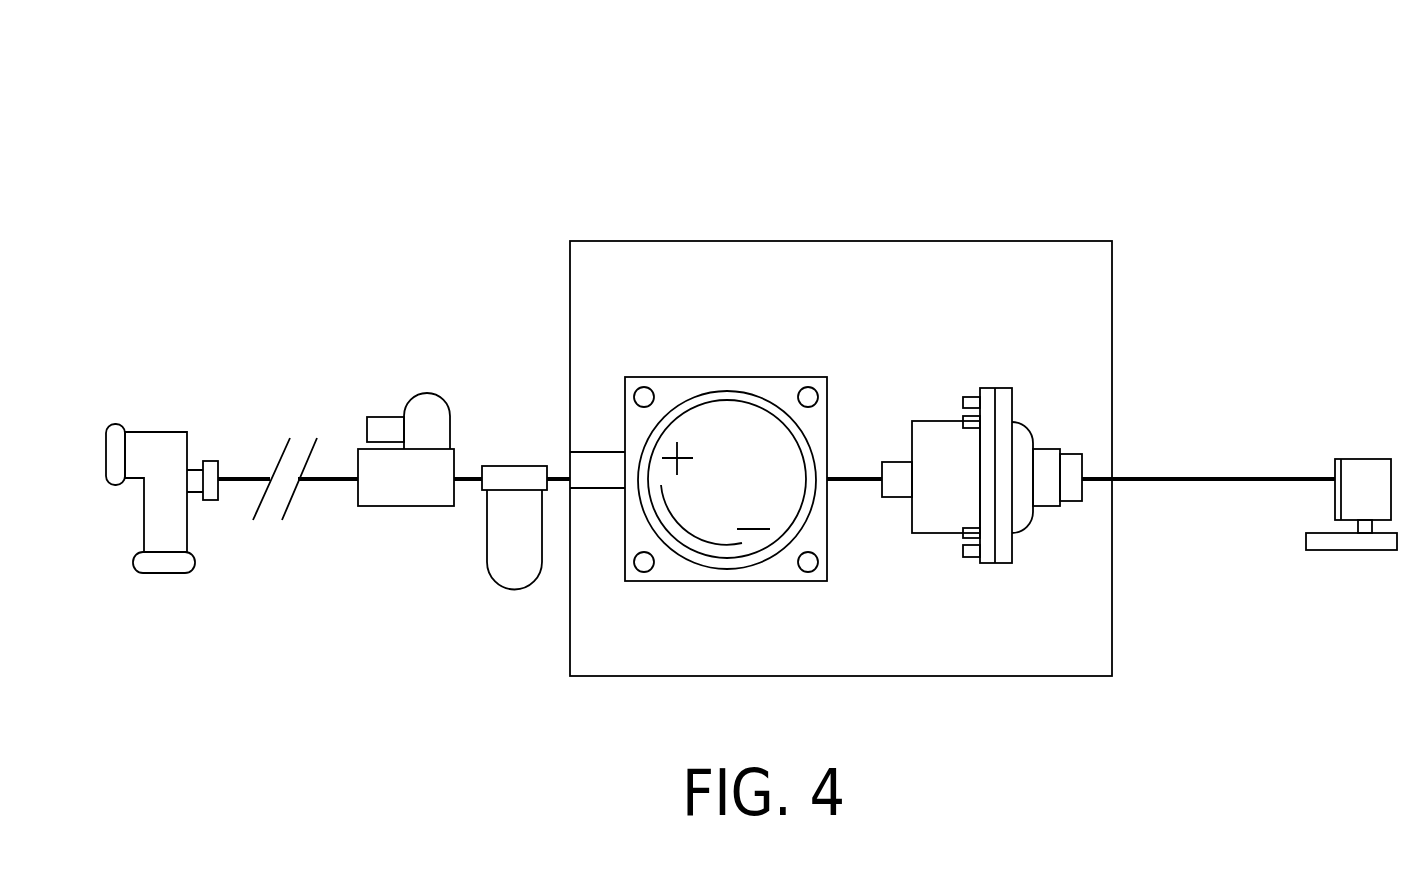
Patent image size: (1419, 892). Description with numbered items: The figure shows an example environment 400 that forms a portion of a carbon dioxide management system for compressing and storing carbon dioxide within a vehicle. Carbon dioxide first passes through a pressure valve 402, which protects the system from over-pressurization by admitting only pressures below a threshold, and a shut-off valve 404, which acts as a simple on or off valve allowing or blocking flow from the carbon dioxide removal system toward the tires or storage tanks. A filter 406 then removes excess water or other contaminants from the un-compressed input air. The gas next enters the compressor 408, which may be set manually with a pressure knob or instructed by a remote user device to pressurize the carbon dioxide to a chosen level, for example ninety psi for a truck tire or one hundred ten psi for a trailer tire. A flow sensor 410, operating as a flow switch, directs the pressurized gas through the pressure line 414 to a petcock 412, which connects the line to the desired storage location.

The example environment 400 is at (1276, 135).
The pressure valve 402 is at (155, 431).
The shut-off valve 404 is at (408, 506).
The filter 406 is at (515, 466).
The compressor 408 is at (729, 592).
The flow sensor 410 is at (1003, 580).
The petcock 412 is at (1358, 560).
The pressure line 414 is at (1163, 475).